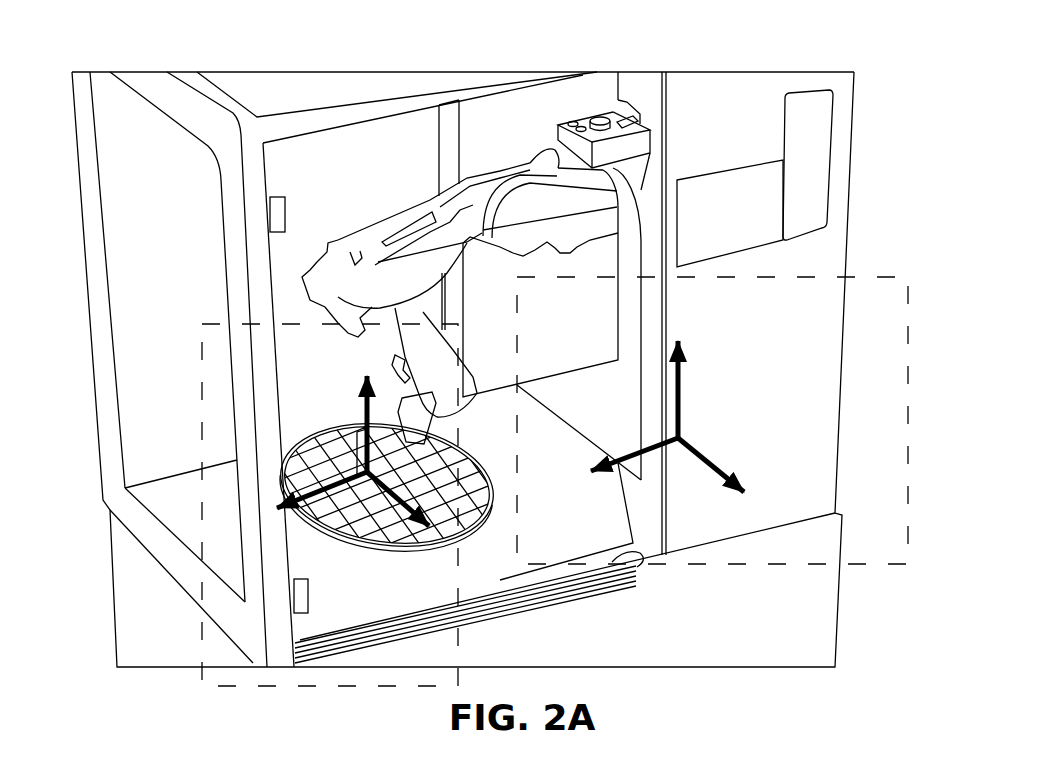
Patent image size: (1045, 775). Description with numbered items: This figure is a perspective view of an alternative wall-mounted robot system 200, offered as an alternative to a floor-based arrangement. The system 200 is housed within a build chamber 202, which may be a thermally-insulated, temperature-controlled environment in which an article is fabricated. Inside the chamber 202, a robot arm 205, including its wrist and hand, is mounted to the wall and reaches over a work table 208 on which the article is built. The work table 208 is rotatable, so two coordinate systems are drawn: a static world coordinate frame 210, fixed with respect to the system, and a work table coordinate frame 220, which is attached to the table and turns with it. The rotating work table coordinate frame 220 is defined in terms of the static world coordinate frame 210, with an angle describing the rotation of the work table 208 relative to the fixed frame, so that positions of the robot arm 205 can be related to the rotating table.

The wall-mounted robot system 200 is at (73, 62).
The build chamber 202 is at (150, 83).
The robot arm 205 is at (425, 207).
The work table 208 is at (370, 552).
The static world coordinate frame 210 is at (883, 276).
The work table coordinate frame 220 is at (201, 448).